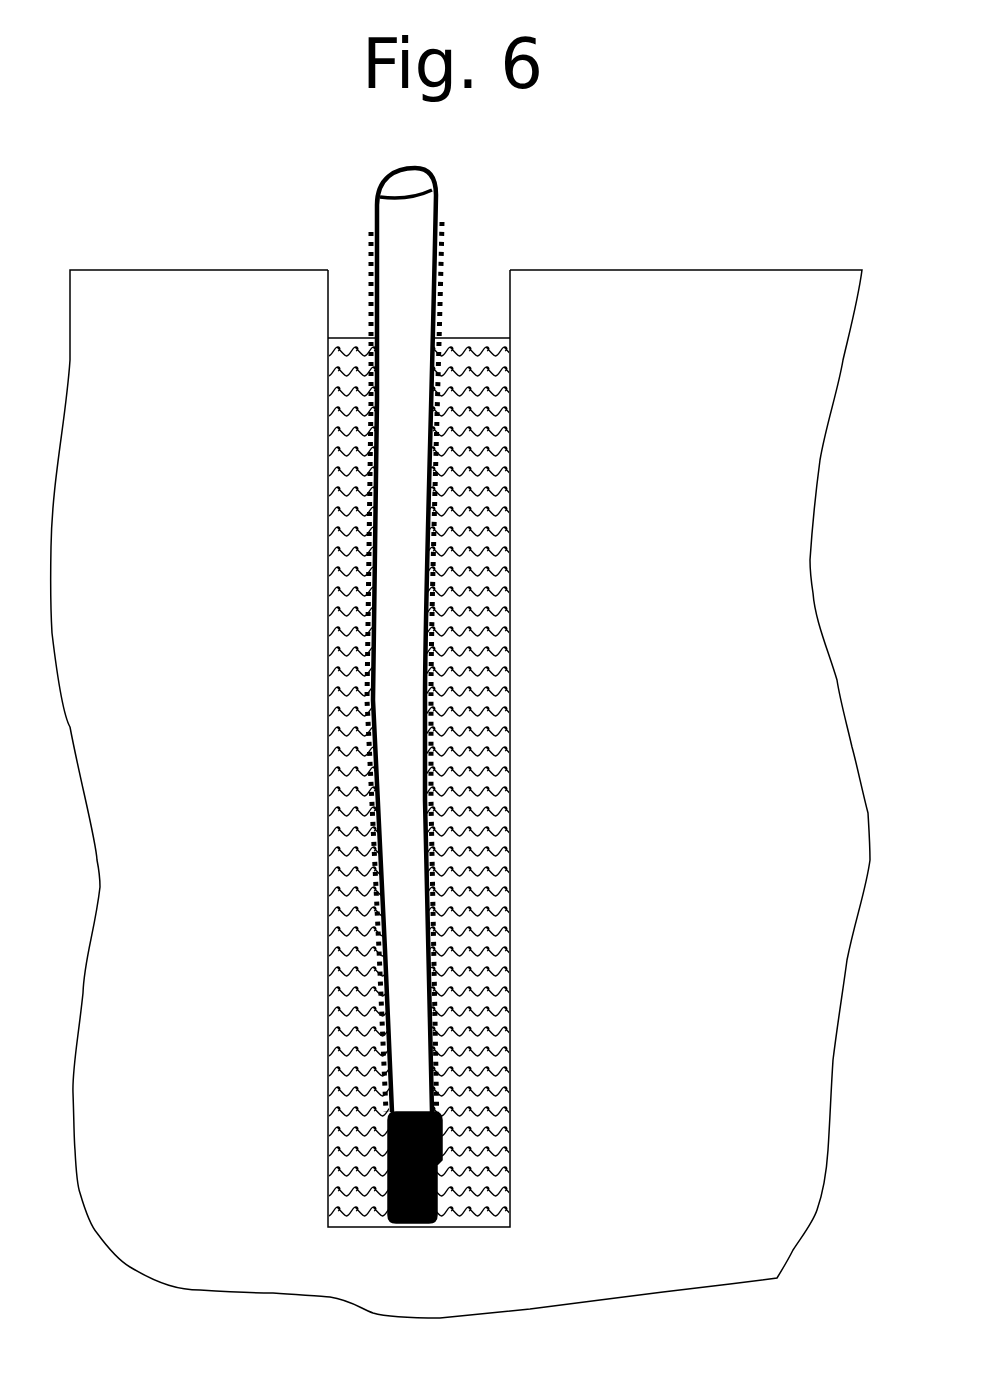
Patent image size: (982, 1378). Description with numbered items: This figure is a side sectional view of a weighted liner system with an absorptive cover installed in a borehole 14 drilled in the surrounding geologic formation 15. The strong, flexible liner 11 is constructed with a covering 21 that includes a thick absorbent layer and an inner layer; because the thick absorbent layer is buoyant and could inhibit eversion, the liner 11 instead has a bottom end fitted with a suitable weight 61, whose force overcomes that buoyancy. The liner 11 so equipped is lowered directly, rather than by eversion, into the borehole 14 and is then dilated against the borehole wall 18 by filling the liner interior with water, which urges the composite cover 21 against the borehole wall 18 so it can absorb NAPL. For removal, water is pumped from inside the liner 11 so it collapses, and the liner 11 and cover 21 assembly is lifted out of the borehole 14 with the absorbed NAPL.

The liner 11 is at (395, 222).
The covering 21 is at (442, 300).
The borehole 14 is at (490, 893).
The geologic formation 15 is at (460, 794).
The borehole wall 18 is at (505, 1060).
The weight 61 is at (437, 1155).